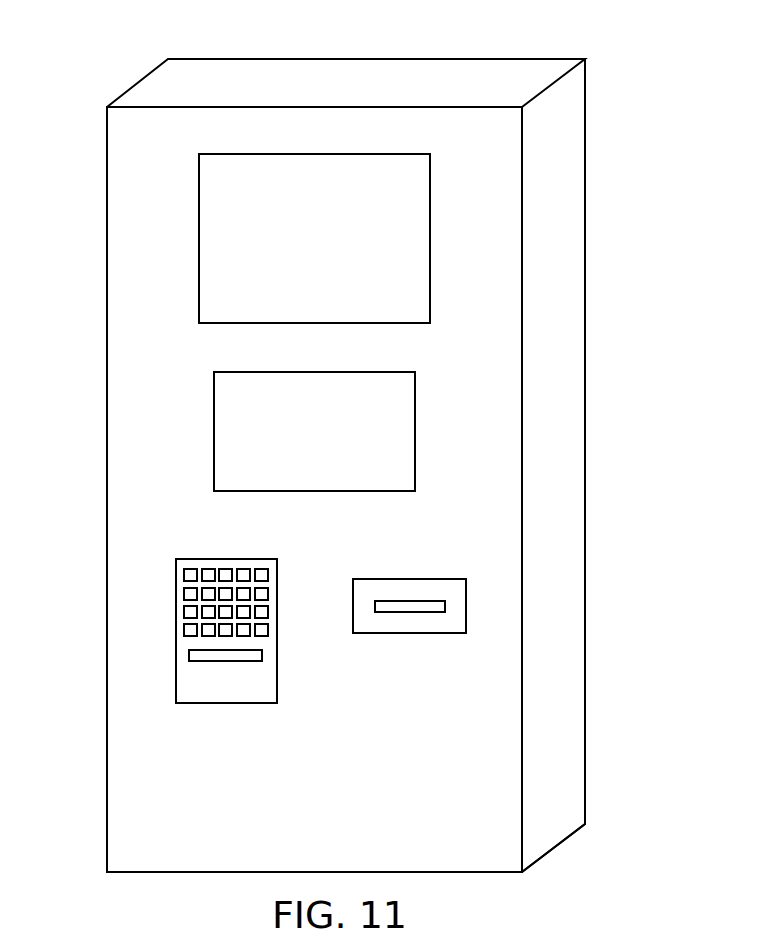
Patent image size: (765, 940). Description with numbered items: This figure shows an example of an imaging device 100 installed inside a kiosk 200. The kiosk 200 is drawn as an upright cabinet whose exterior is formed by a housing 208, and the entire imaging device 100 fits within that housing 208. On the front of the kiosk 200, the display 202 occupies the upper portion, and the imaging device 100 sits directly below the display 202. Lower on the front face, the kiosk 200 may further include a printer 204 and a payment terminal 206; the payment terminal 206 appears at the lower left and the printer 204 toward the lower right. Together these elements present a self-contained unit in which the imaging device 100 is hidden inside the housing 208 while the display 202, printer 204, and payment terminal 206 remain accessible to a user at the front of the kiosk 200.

The kiosk 200 is at (474, 72).
The display 202 is at (410, 224).
The imaging device 100 is at (394, 424).
The printer 204 is at (450, 589).
The payment terminal 206 is at (192, 683).
The housing 208 is at (558, 657).